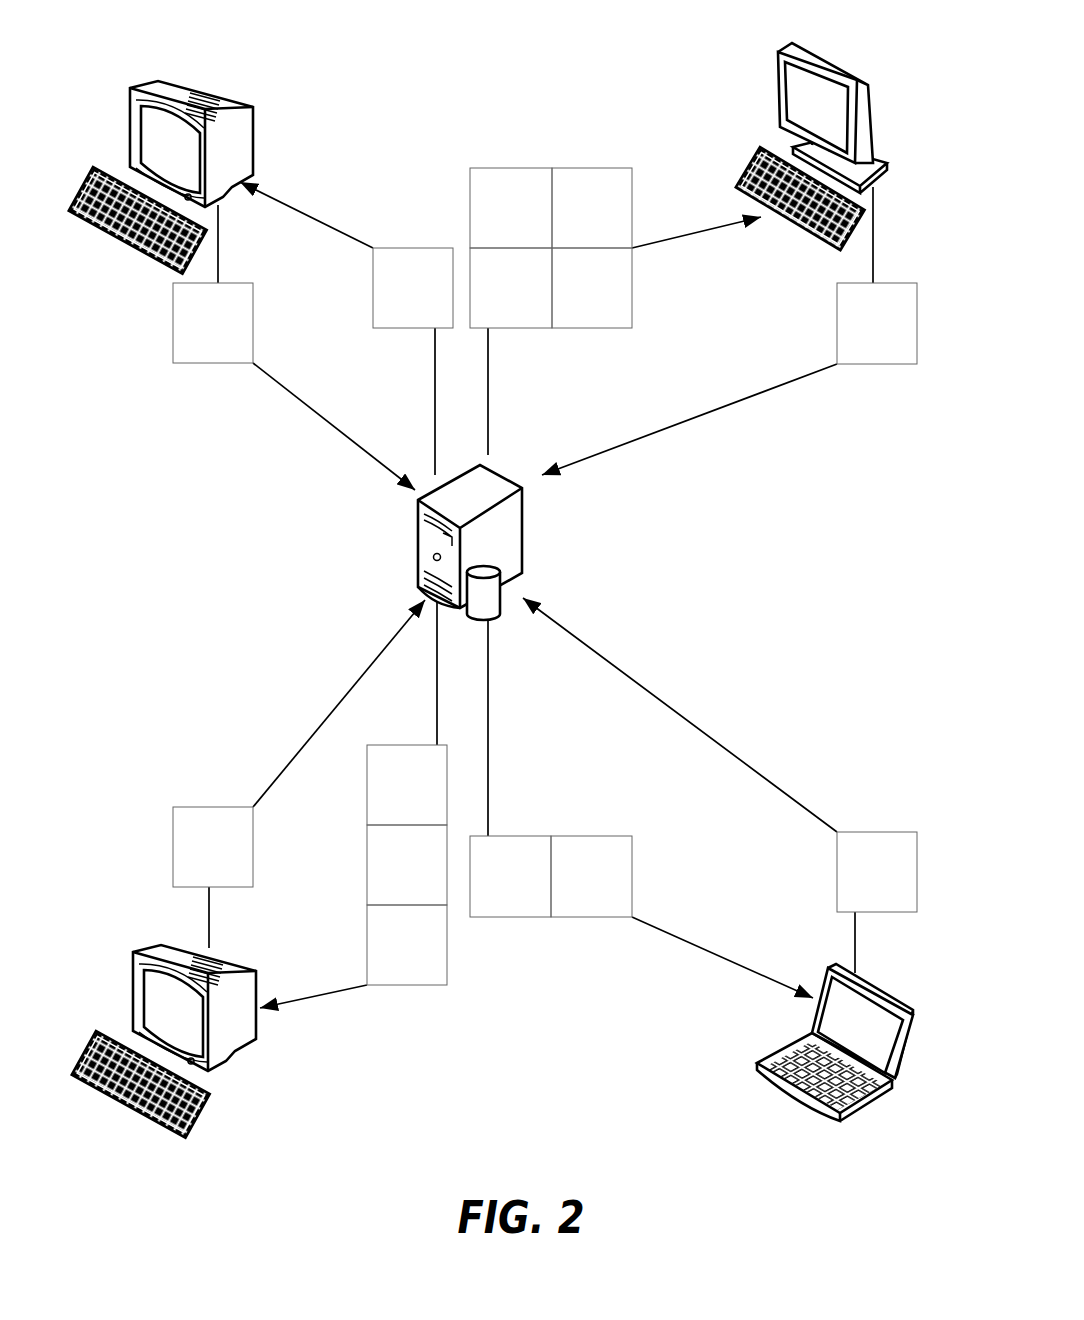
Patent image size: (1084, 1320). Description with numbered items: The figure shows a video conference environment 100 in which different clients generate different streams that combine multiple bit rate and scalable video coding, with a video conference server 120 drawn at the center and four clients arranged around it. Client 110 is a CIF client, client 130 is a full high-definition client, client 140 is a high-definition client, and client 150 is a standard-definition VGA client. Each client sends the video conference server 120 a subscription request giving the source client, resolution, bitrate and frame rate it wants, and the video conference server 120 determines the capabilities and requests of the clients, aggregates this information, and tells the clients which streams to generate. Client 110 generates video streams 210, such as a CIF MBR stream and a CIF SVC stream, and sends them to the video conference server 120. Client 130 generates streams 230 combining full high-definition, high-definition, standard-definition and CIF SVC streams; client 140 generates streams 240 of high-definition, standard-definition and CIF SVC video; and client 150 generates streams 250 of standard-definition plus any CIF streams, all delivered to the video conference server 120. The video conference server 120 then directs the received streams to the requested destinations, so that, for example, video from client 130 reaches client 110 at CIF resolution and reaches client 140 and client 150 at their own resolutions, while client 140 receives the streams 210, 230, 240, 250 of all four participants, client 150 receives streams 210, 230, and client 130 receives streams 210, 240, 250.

The video conference environment 100 is at (510, 25).
The client 110 is at (228, 98).
The video conference server 120 is at (497, 473).
The client 130 is at (263, 1001).
The client 140 is at (840, 63).
The client 150 is at (862, 981).
The video streams 210 is at (362, 542).
The video streams 230 is at (402, 582).
The video streams 240 is at (642, 536).
The video streams 250 is at (642, 616).